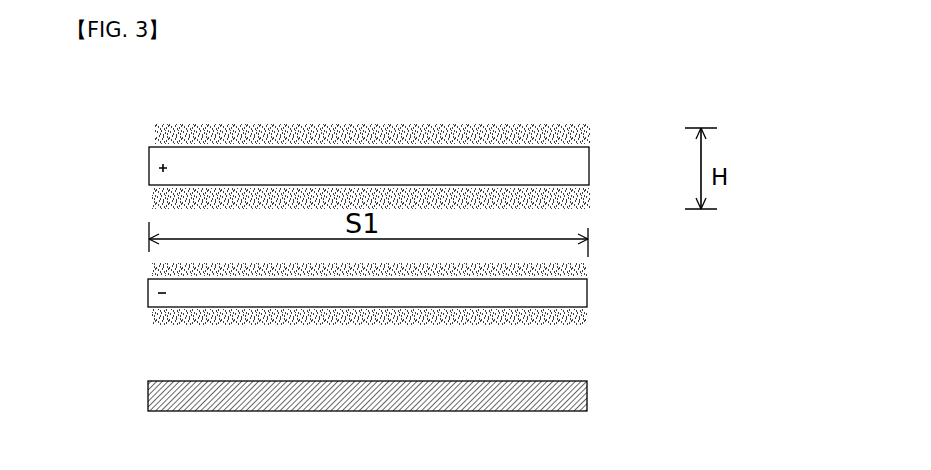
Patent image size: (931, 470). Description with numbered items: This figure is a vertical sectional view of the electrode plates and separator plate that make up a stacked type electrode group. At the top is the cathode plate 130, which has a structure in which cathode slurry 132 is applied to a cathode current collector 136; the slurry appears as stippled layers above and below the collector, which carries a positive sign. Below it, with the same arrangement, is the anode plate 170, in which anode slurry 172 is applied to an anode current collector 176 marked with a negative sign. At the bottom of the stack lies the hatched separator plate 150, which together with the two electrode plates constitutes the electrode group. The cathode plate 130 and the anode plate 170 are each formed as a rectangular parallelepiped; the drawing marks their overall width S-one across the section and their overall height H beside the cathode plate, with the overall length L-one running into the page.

The cathode plate 130 is at (598, 168).
The cathode slurry 132 is at (157, 126).
The cathode current collector 136 is at (158, 167).
The anode plate 170 is at (598, 297).
The anode slurry 172 is at (157, 270).
The anode current collector 176 is at (160, 297).
The separator plate 150 is at (598, 402).